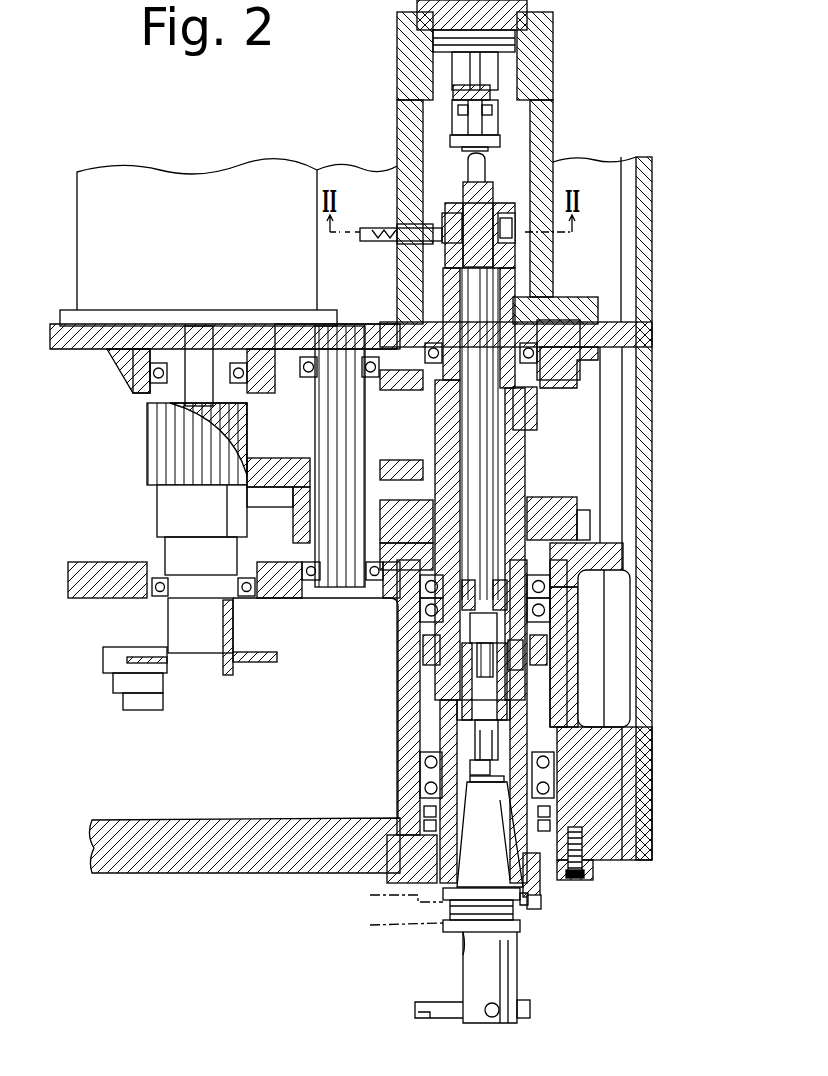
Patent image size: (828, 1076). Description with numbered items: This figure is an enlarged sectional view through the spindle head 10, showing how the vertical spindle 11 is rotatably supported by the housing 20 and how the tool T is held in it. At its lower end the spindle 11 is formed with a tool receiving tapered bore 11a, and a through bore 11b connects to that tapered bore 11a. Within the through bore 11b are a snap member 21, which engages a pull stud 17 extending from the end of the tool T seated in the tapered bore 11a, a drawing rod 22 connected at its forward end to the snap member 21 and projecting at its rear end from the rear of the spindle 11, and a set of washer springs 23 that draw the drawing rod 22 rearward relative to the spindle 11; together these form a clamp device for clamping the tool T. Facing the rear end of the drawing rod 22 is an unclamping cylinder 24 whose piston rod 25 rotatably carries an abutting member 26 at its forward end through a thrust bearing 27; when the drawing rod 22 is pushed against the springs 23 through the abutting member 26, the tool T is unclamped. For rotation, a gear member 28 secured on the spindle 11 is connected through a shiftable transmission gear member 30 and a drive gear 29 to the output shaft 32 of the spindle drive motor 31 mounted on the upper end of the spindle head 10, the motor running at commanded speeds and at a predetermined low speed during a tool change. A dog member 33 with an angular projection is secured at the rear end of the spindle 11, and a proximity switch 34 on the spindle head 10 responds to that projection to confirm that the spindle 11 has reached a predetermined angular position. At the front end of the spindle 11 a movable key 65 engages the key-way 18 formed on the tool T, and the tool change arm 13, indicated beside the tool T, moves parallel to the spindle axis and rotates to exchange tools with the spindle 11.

The spindle head 10 is at (652, 347).
The spindle 11 is at (447, 707).
The tool receiving tapered bore 11a is at (513, 822).
The through bore 11b is at (510, 648).
The tool change arm 13 is at (390, 923).
The pull stud 17 is at (455, 773).
The key-way 18 is at (533, 907).
The housing 20 is at (217, 860).
The snap member 21 is at (470, 690).
The drawing rod 22 is at (487, 462).
The washer springs 23 is at (495, 257).
The unclamping cylinder 24 is at (512, 62).
The piston rod 25 is at (492, 77).
The abutting member 26 is at (490, 143).
The thrust bearing 27 is at (498, 117).
The gear member 28 is at (573, 500).
The drive gear 29 is at (163, 450).
The shiftable transmission gear member 30 is at (270, 473).
The spindle drive motor 31 is at (87, 251).
The output shaft 32 is at (192, 395).
The dog member 33 is at (407, 228).
The proximity switch 34 is at (405, 243).
The movable key 65 is at (542, 882).
The tool T is at (468, 973).